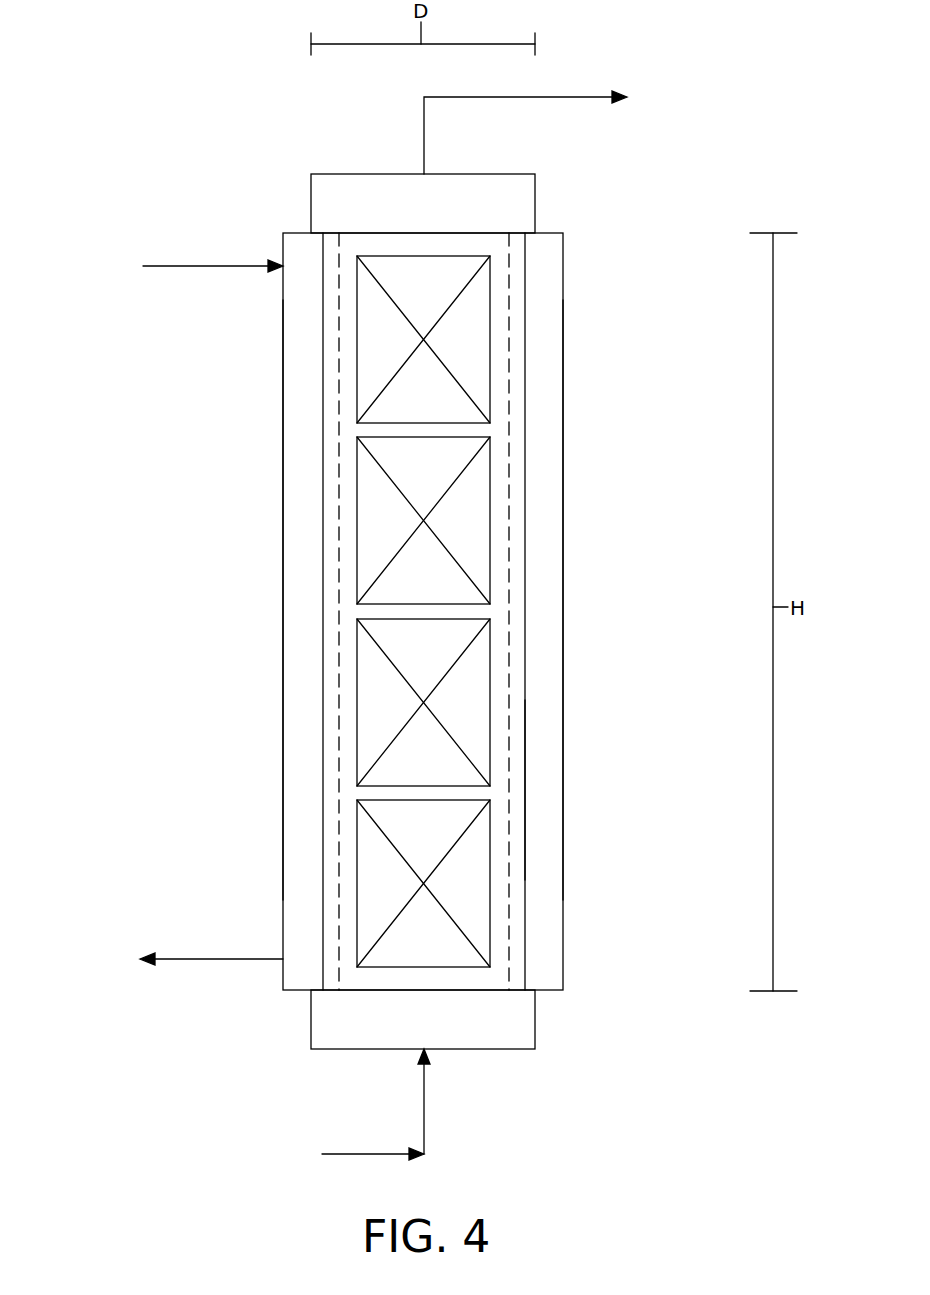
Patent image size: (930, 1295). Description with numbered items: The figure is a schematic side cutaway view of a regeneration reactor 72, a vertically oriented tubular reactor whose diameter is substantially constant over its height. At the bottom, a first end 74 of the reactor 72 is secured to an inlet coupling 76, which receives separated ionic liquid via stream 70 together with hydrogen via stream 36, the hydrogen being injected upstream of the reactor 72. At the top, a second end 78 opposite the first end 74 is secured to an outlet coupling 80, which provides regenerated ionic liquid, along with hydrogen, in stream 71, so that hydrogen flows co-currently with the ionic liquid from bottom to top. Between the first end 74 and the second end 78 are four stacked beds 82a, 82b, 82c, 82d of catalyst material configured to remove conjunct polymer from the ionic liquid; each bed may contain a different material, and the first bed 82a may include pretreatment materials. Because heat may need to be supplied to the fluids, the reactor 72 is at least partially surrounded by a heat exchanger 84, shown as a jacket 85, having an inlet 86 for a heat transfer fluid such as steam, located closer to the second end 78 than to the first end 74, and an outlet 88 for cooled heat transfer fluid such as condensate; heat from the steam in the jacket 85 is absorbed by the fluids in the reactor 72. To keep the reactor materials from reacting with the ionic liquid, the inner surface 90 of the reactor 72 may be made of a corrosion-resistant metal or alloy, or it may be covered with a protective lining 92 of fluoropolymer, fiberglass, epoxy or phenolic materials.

The hydrogen stream 36 is at (342, 1153).
The separated ionic liquid stream 70 is at (424, 1127).
The regenerated ionic liquid stream 71 is at (595, 96).
The regeneration reactor 72 is at (650, 300).
The first end 74 is at (502, 975).
The inlet coupling 76 is at (522, 1035).
The second end 78 is at (330, 233).
The outlet coupling 80 is at (528, 178).
The first bed 82a is at (475, 908).
The bed 82b is at (475, 727).
The bed 82c is at (472, 545).
The bed 82d is at (472, 362).
The heat exchanger 84 is at (548, 600).
The jacket 85 is at (280, 675).
The inlet 86 is at (202, 266).
The outlet 88 is at (214, 958).
The inner surface 90 is at (525, 792).
The protective lining 92 is at (517, 768).